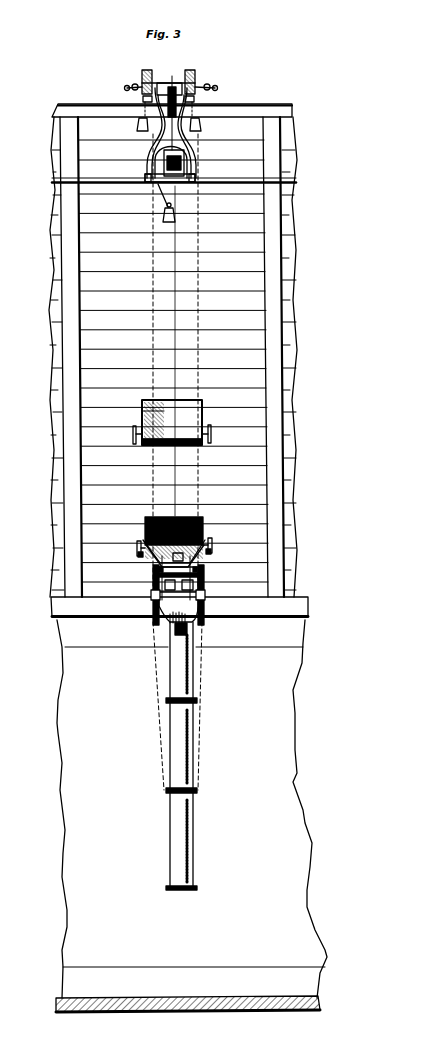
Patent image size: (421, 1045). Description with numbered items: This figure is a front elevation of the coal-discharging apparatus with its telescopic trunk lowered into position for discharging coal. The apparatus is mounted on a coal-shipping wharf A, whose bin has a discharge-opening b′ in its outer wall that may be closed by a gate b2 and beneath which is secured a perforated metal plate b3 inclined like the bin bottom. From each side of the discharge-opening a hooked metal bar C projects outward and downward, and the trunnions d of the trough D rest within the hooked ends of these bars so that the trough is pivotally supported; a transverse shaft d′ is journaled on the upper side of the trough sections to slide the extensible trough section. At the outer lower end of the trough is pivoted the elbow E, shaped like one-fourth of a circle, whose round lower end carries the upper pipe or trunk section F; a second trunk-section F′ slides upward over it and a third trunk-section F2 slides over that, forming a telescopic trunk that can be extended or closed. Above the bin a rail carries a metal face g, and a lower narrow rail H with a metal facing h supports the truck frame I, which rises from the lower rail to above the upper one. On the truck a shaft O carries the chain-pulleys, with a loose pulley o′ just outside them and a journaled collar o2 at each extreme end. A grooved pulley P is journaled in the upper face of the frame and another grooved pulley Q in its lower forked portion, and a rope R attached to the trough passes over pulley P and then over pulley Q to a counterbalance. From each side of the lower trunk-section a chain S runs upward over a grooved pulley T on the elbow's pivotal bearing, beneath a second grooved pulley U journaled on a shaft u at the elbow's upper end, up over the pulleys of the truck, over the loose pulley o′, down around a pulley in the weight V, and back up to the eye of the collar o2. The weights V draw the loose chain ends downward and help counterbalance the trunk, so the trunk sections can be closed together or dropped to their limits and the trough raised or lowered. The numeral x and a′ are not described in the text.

The coal-shipping wharf A is at (188, 564).
The metal face g is at (122, 104).
The metal facing h is at (232, 176).
The second narrow rail H is at (197, 181).
The chain S is at (201, 462).
The second shaft O is at (172, 83).
The grooved pulley P is at (186, 80).
The loose pulley o′ is at (140, 80).
The journaled collar o2 is at (175, 90).
The hooks x is at (171, 105).
The weight V is at (137, 126).
The metal frame I is at (147, 152).
The grooved pulley Q is at (190, 160).
The rope R is at (174, 492).
The discharge-opening b′ is at (203, 407).
The gate b2 is at (142, 411).
The perforated metal plate b3 is at (165, 447).
The metal bar C is at (133, 434).
The shaft d′ is at (210, 556).
The valve a′ is at (177, 569).
The trough D is at (158, 570).
The trunnion d is at (170, 585).
The shaft u is at (187, 585).
The grooved pulley T is at (204, 605).
The second grooved pulley U is at (204, 589).
The elbow E is at (178, 617).
The pipe or trunk section F is at (170, 676).
The second trunk-section F′ is at (193, 746).
The third trunk-section F2 is at (172, 830).